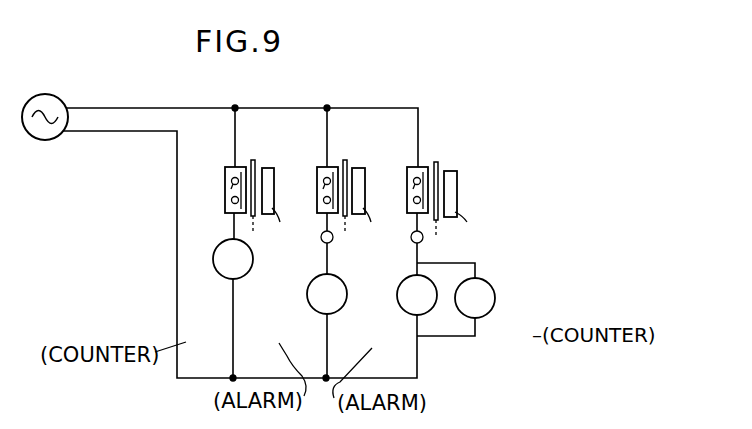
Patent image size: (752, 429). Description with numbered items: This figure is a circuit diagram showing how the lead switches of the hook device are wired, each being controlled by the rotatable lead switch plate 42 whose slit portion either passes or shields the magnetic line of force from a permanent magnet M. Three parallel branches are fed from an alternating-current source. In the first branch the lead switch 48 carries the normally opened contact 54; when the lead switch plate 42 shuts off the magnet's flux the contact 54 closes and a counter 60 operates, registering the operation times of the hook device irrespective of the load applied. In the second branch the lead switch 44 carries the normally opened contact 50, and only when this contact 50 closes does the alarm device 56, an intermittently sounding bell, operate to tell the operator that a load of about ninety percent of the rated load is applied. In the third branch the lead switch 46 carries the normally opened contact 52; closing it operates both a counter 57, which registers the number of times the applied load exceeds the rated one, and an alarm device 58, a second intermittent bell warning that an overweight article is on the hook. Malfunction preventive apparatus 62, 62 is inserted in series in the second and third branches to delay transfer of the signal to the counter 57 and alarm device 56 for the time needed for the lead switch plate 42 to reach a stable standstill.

The lead switch plate 42 is at (253, 162).
The lead switch 44 is at (315, 166).
The lead switch 46 is at (405, 166).
The lead switch 48 is at (223, 166).
The normally opened contact 50 is at (317, 190).
The normally opened contact 52 is at (407, 190).
The normally opened contact 54 is at (225, 190).
The alarm device 56 is at (321, 313).
The counter 57 is at (492, 312).
The alarm device 58 is at (408, 314).
The counter 60 is at (225, 279).
The malfunction preventive apparatus 62 is at (322, 241).